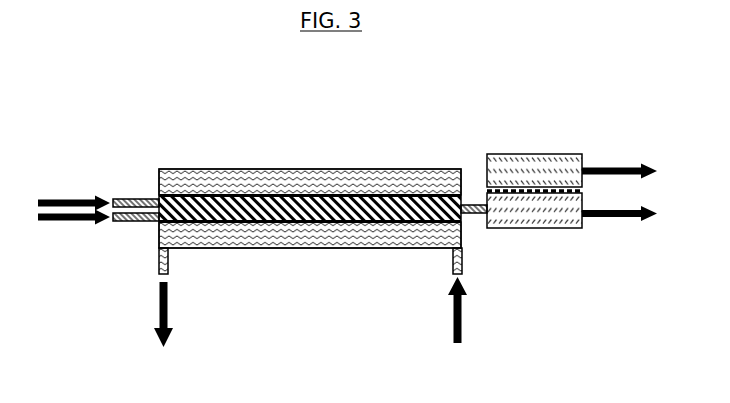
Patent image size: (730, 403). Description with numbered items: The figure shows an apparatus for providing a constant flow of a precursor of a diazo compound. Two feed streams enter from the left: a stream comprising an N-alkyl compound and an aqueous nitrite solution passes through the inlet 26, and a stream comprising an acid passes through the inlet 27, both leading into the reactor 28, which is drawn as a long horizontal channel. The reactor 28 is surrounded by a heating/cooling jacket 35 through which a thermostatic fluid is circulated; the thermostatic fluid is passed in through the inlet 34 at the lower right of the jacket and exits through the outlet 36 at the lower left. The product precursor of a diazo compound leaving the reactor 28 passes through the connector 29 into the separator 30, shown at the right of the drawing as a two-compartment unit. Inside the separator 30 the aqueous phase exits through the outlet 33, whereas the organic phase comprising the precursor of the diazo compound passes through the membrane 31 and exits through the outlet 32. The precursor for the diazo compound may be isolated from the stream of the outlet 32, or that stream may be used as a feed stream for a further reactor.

The inlet 26 is at (85, 198).
The inlet 27 is at (85, 216).
The reactor 28 is at (313, 197).
The connector 29 is at (476, 205).
The separator 30 is at (548, 203).
The membrane 31 is at (529, 193).
The outlet 32 is at (642, 170).
The outlet 33 is at (642, 214).
The inlet 34 is at (451, 311).
The heating/cooling jacket 35 is at (367, 185).
The outlet 36 is at (160, 311).